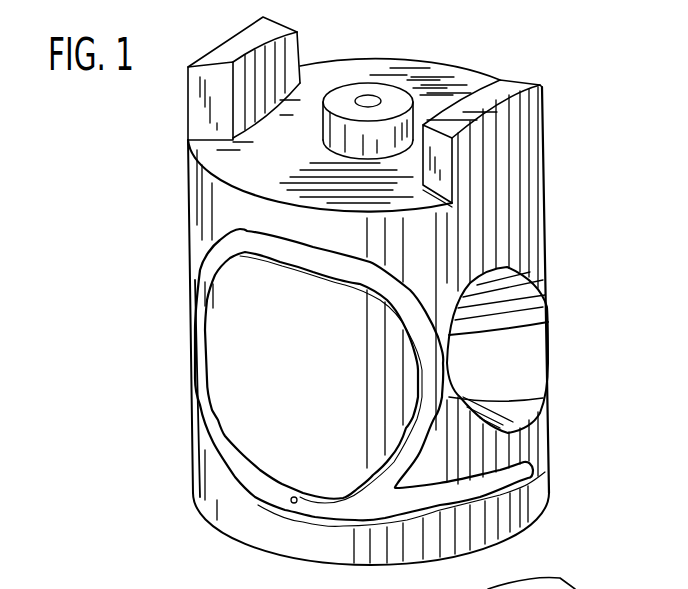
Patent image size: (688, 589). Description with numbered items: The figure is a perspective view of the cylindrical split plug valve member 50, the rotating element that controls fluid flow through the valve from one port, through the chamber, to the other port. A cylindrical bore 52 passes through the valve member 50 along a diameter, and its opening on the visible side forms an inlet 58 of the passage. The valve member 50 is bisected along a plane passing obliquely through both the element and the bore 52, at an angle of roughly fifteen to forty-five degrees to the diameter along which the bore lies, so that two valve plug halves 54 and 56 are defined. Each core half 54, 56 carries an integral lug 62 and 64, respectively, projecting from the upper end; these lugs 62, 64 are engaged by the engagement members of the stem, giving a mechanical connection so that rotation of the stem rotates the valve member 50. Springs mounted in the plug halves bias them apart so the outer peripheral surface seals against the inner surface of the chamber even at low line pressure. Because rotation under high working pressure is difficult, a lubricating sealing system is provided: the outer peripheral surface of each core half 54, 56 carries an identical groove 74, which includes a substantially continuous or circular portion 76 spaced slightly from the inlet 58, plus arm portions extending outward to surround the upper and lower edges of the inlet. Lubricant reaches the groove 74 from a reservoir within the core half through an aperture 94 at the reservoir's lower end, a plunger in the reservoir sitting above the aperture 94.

The cylindrical split plug valve member 50 is at (551, 249).
The cylindrical bore 52 is at (531, 380).
The valve plug half 54 is at (202, 465).
The valve plug half 56 is at (471, 34).
The inlet 58 is at (478, 337).
The lug 62 is at (518, 120).
The lug 64 is at (235, 42).
The groove 74 is at (185, 333).
The circular portion 76 is at (212, 258).
The aperture 94 is at (293, 505).